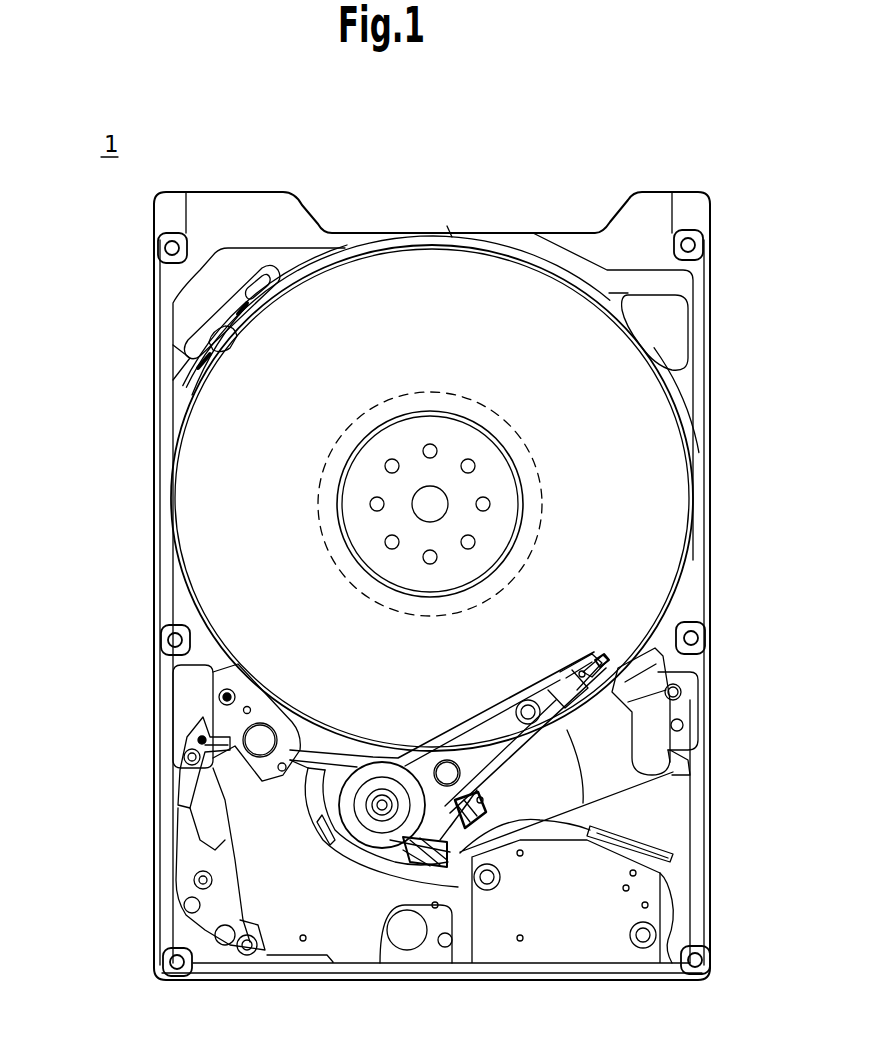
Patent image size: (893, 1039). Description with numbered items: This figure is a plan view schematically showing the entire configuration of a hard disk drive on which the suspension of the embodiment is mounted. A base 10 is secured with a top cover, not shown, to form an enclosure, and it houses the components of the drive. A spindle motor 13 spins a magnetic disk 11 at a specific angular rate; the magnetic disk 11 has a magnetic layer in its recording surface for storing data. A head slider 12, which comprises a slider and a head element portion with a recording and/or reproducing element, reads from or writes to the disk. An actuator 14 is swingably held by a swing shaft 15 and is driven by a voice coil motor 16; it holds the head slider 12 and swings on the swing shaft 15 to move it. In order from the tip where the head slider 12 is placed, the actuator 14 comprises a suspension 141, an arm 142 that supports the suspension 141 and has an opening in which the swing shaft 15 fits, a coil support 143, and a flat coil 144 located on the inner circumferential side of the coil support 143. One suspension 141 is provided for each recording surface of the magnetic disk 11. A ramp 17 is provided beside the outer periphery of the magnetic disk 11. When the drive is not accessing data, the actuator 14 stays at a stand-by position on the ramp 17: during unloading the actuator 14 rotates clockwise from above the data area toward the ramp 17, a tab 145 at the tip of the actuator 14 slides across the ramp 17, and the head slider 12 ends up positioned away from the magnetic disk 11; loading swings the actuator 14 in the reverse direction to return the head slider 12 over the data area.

The base 10 is at (452, 192).
The magnetic disk 11 is at (680, 572).
The head slider 12 is at (598, 660).
The spindle motor 13 is at (530, 548).
The actuator 14 is at (413, 735).
The suspension 141 is at (562, 684).
The arm 142 is at (500, 722).
The coil support 143 is at (200, 778).
The flat coil 144 is at (352, 755).
The tab 145 is at (601, 660).
The swing shaft 15 is at (383, 803).
The voice coil motor 16 is at (210, 849).
The ramp 17 is at (668, 702).